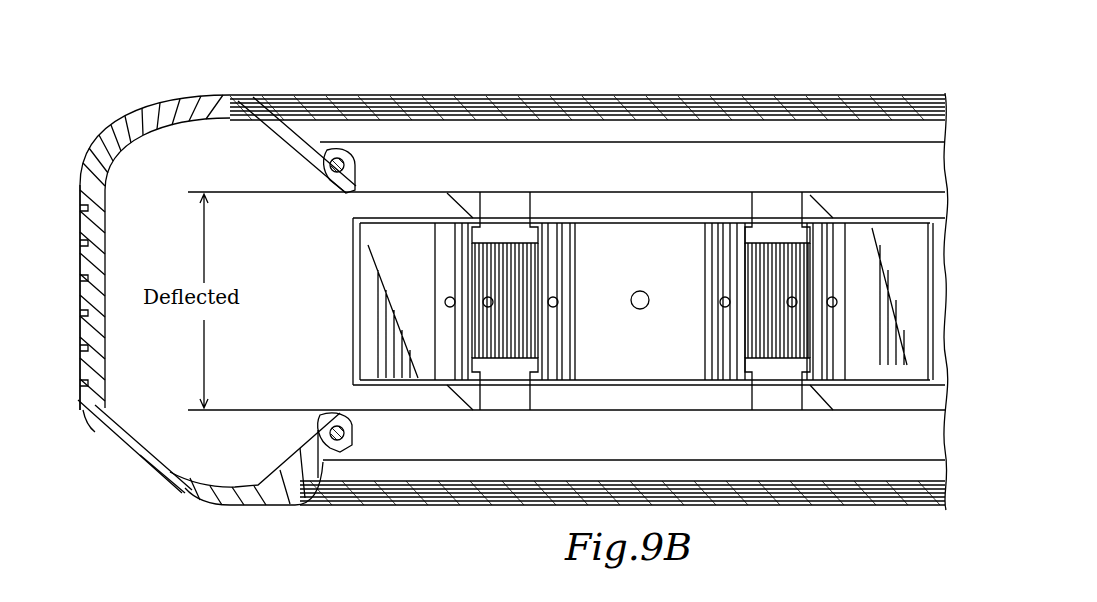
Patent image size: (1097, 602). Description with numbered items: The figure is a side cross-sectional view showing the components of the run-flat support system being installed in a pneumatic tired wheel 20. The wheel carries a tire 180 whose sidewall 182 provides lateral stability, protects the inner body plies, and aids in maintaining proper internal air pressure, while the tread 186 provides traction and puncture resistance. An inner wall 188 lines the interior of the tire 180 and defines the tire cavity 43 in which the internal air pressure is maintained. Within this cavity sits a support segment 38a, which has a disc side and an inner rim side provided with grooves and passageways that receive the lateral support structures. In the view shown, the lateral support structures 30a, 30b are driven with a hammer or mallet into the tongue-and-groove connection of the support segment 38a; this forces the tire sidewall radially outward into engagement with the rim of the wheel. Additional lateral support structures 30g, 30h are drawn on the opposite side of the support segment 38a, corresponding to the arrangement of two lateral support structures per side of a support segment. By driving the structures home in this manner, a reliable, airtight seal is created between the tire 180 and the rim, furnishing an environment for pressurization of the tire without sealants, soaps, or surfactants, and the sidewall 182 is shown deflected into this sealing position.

The pneumatic tired wheel 20 is at (222, 95).
The tire 180 is at (217, 94).
The tread 186 is at (77, 250).
The inner wall 188 is at (150, 143).
The tire cavity 43 is at (110, 236).
The sidewall 182 is at (140, 478).
The lateral support structure 30a is at (503, 220).
The lateral support structure 30b is at (773, 220).
The first electrode lower connector 30g is at (508, 392).
The second electrode lower connector 30h is at (778, 392).
The support segment 38a is at (642, 238).